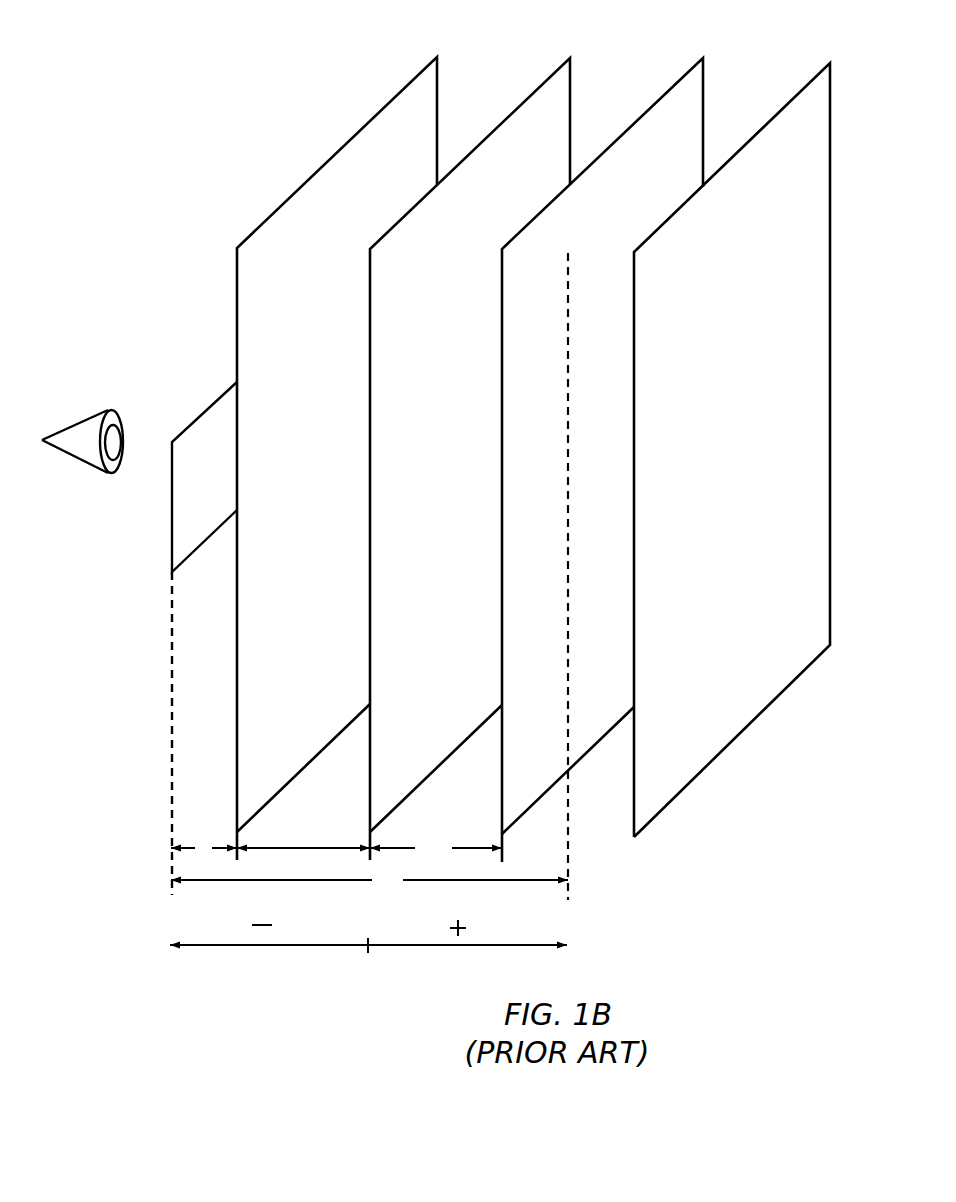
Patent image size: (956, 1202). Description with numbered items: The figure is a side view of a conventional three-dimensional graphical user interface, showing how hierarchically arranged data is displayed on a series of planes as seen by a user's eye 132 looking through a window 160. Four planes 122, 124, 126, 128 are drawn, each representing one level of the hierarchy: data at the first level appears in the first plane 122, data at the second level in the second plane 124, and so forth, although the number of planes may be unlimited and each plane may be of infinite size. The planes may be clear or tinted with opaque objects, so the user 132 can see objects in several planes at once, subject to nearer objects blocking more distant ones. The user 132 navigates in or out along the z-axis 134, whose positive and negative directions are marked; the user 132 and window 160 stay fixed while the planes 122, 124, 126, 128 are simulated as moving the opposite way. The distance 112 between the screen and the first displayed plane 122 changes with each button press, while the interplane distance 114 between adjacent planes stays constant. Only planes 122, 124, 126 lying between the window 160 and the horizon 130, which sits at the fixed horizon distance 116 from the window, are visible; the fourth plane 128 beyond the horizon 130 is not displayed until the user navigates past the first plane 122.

The distance between the screen and the first plane displayed 112 is at (188, 850).
The interplane distance 114 is at (282, 850).
The horizon distance 116 is at (369, 881).
The first plane 122 is at (400, 92).
The second plane 124 is at (537, 88).
The third plane 126 is at (670, 90).
The fourth plane 128 is at (800, 92).
The horizon 130 is at (568, 860).
The user's eye 132 is at (87, 417).
The z-axis 134 is at (493, 945).
The window 160 is at (172, 530).